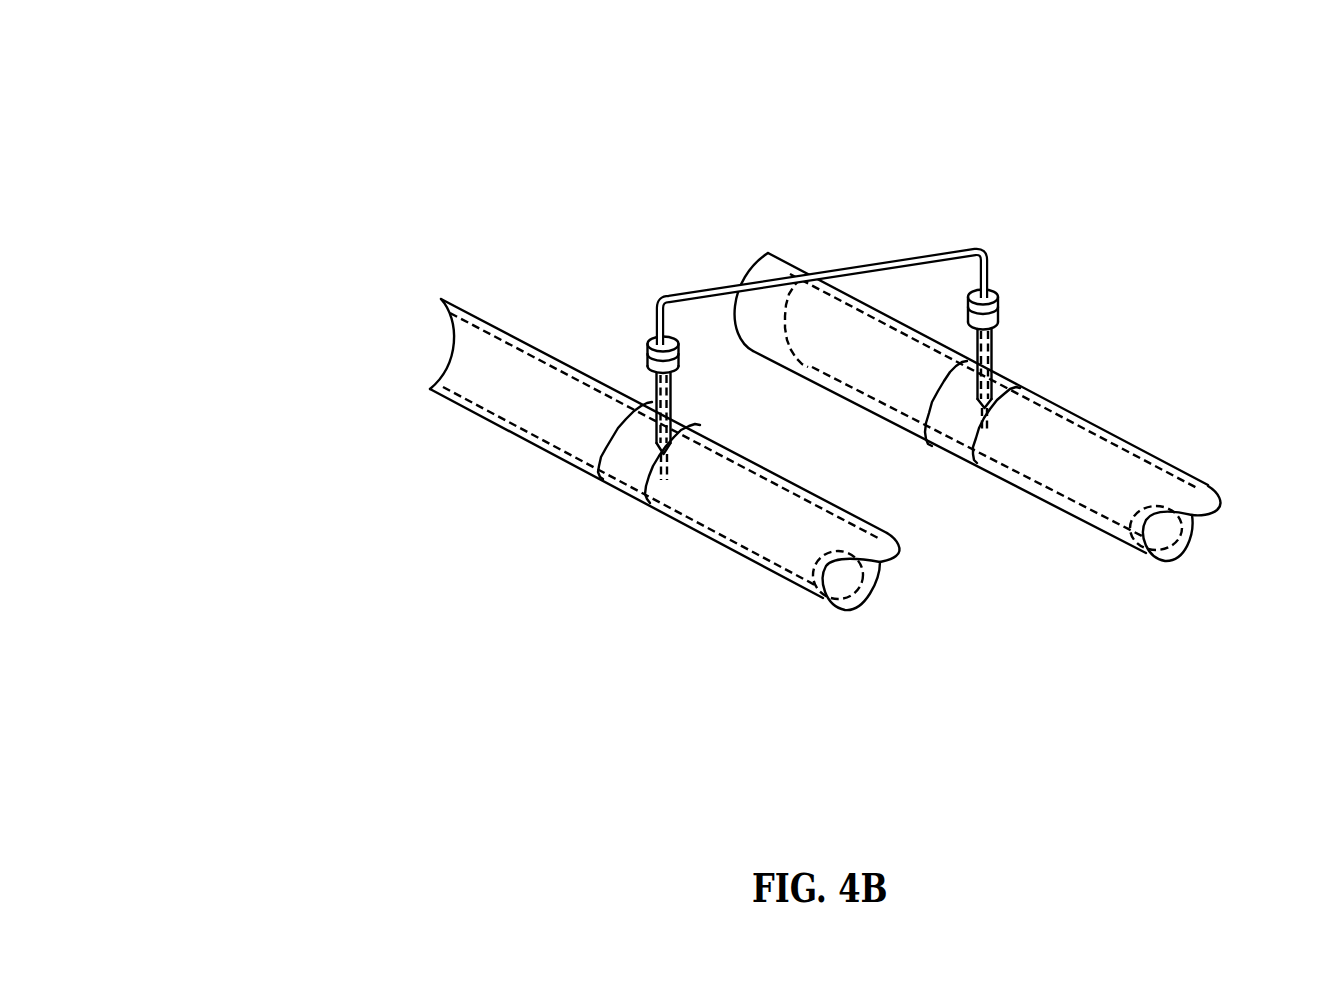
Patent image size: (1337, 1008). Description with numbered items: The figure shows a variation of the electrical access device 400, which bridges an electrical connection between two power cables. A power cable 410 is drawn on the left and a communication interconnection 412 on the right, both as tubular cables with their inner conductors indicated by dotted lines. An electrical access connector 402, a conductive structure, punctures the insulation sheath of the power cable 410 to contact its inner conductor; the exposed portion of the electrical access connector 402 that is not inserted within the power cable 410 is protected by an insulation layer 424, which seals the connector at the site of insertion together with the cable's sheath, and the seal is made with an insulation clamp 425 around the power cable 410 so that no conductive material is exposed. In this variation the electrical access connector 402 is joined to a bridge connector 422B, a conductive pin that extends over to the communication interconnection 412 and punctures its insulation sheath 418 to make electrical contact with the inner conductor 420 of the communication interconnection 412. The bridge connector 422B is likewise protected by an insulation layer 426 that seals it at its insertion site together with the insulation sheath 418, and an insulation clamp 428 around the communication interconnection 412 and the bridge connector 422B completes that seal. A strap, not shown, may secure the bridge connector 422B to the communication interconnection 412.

The electrical access device 400 is at (264, 56).
The electrical access connector 402 is at (676, 412).
The power cable 410 is at (834, 486).
The communication interconnection 412 is at (1009, 407).
The insulation sheath 418 is at (1045, 394).
The inner conductor 420 is at (1097, 435).
The bridge connector 422B is at (997, 327).
The insulation layer 424 is at (676, 377).
The insulation clamp 425 is at (636, 457).
The insulation layer 426 is at (994, 361).
The insulation clamp 428 is at (955, 408).